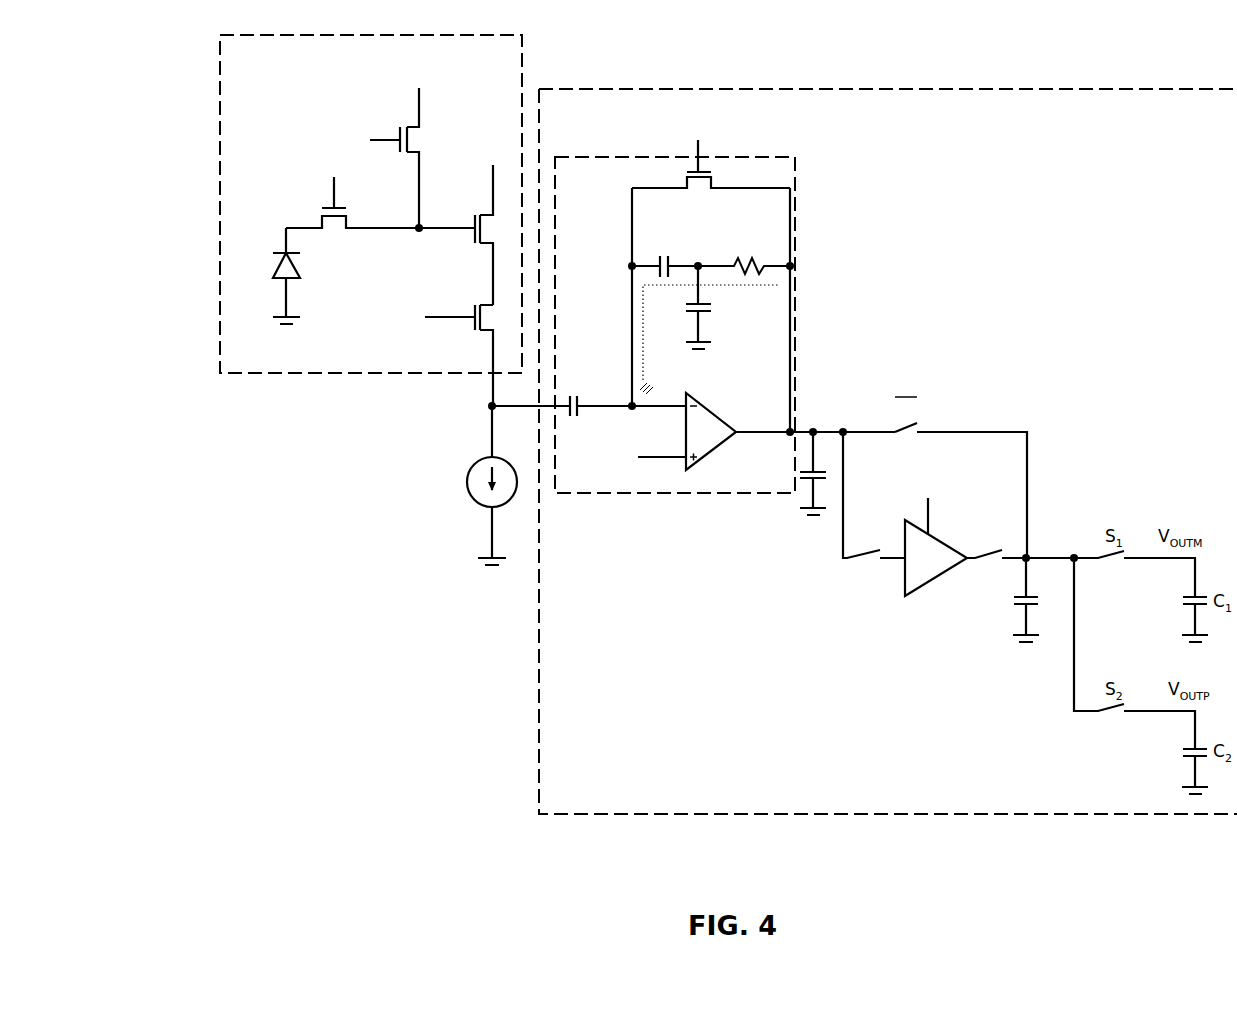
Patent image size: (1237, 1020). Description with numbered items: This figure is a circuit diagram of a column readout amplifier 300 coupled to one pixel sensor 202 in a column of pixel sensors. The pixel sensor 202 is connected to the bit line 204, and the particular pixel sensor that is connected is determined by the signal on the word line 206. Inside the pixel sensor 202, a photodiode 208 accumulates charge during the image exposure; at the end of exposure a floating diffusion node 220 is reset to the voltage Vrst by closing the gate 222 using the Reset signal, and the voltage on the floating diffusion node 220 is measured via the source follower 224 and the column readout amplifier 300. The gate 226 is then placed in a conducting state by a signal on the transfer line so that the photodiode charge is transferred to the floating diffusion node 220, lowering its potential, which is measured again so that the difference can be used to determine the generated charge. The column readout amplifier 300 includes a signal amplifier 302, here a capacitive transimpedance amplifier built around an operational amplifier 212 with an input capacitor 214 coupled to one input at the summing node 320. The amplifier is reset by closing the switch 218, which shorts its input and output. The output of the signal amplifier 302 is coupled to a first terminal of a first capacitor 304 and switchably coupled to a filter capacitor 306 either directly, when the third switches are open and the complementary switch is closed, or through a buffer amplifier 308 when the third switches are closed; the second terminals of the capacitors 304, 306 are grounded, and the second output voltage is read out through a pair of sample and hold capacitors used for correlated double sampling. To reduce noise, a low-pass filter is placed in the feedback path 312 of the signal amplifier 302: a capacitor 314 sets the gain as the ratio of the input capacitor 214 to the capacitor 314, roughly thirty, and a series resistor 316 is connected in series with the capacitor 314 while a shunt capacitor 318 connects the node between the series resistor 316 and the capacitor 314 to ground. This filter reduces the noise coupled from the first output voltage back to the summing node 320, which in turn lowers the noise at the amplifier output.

The pixel sensor 202 is at (218, 205).
The bit line 204 is at (492, 422).
The word line 206 is at (448, 349).
The photodiode 208 is at (256, 270).
The operational amplifier 212 is at (706, 470).
The input capacitor 214 is at (575, 382).
The switch 218 is at (722, 174).
The floating diffusion node 220 is at (437, 240).
The gate 222 is at (416, 140).
The source follower 224 is at (487, 223).
The gate 226 is at (333, 236).
The column readout amplifier 300 is at (905, 88).
The signal amplifier 302 is at (628, 157).
The first capacitor 304 is at (789, 480).
The filter capacitor 306 is at (1001, 597).
The buffer amplifier 308 is at (906, 602).
The feedback path 312 is at (710, 339).
The capacitor 314 is at (679, 253).
The series resistor 316 is at (744, 254).
The shunt capacitor 318 is at (720, 305).
The summing node 320 is at (633, 310).